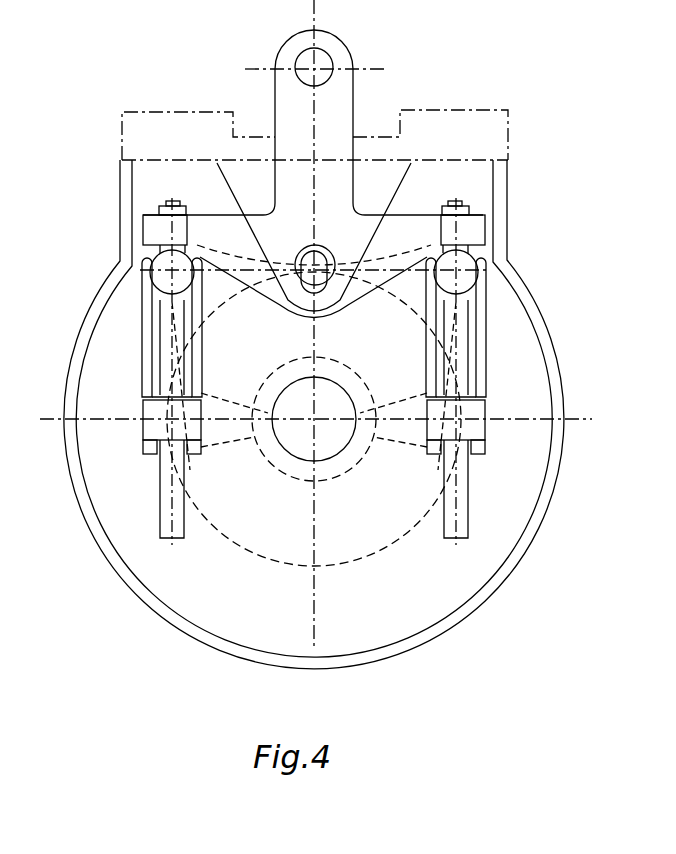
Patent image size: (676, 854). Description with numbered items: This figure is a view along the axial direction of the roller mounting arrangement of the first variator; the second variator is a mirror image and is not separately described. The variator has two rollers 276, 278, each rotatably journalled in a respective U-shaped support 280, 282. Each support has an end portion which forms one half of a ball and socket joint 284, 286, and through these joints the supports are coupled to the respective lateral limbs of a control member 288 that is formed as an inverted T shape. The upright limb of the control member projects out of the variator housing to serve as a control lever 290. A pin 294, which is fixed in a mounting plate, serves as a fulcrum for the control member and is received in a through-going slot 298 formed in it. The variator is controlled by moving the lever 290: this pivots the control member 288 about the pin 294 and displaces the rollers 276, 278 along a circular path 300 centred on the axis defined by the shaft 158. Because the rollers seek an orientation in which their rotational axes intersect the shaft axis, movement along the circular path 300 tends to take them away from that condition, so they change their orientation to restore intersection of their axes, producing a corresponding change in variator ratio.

The shaft 158 is at (351, 374).
The roller 276 is at (170, 493).
The roller 278 is at (455, 505).
The U-shaped support 280 is at (148, 333).
The U-shaped support 282 is at (478, 327).
The ball and socket joint 284 is at (134, 282).
The ball and socket joint 286 is at (480, 270).
The control member 288 is at (218, 212).
The control lever 290 is at (297, 118).
The pin 294 is at (372, 289).
The through-going slot 298 is at (300, 311).
The circular path 300 is at (177, 377).